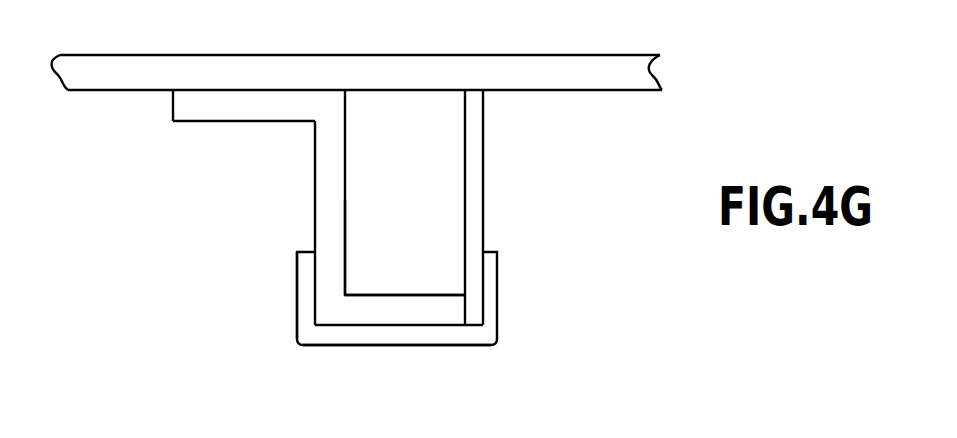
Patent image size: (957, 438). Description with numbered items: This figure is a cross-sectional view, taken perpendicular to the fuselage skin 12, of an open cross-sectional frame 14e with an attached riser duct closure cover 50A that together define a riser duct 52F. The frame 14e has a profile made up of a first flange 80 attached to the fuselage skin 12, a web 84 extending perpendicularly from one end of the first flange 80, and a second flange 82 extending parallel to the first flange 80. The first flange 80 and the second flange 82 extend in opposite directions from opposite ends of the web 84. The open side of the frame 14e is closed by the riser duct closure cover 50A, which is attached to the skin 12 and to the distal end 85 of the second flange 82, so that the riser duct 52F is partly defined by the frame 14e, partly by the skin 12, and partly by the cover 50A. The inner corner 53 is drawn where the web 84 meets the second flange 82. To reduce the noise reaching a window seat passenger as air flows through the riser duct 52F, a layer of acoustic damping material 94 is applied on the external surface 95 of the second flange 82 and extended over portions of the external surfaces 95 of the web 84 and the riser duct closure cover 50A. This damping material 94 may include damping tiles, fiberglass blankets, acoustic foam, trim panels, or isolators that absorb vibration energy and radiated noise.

The fuselage skin 12 is at (567, 55).
The first flange 80 is at (260, 103).
The open cross-sectional frame 14e is at (208, 148).
The riser duct 52F is at (256, 237).
The riser duct closure cover 50A is at (483, 172).
The web 84 is at (346, 200).
The inner corner 53 is at (347, 293).
The distal end 85 is at (455, 310).
The second flange 82 is at (363, 312).
The acoustic damping material 94 is at (497, 328).
The external surface 95 is at (313, 288).